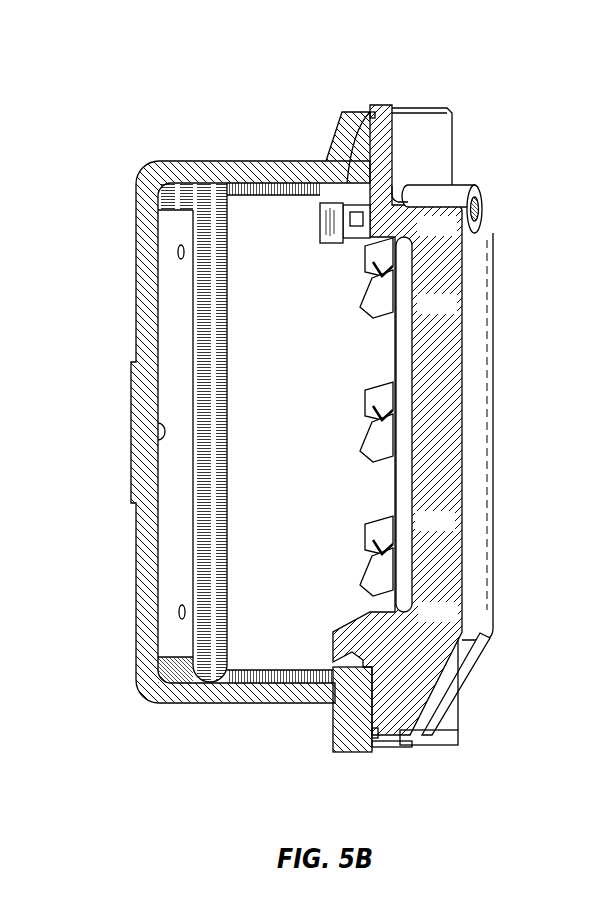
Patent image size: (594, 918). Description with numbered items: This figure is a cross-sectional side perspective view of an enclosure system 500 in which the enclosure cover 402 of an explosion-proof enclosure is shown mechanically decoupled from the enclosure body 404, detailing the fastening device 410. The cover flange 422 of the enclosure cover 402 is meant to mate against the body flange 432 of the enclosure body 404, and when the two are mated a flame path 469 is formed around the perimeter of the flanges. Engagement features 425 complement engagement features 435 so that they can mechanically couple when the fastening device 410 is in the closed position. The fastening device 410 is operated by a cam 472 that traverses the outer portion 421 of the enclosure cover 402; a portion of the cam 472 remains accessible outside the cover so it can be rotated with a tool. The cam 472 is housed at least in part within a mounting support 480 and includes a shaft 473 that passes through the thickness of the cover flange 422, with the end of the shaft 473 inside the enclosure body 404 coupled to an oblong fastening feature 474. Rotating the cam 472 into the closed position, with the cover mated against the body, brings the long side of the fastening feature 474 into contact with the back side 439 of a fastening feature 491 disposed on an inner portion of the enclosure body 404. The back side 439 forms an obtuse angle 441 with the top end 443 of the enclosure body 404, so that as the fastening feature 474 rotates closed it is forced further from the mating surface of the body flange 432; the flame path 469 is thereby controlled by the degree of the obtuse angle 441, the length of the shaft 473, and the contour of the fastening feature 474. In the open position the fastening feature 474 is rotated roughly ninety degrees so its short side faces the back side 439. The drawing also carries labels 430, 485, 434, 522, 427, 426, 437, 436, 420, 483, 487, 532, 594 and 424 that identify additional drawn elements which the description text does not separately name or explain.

The enclosure system 500 is at (145, 82).
The enclosure body 404 is at (122, 397).
The top end 443 is at (213, 160).
The fastening feature 491 is at (333, 156).
The interior cavity surface 430 is at (180, 330).
The obtuse angle 441 is at (320, 192).
The lower interior surface 485 is at (333, 665).
The enclosure cover 402 is at (516, 380).
The upper flange 434 is at (341, 116).
The pin 522 is at (368, 110).
The flame path 469 is at (387, 105).
The door body 427 is at (390, 268).
The upper arm 426 is at (396, 255).
The body wall portion 437 is at (384, 552).
The lower body portion 436 is at (394, 575).
The outer portion 421 is at (435, 125).
The cover flange 422 is at (427, 108).
The door plate 420 is at (480, 512).
The mounting support 480 is at (440, 182).
The cam 472 is at (483, 204).
The fastening feature 474 is at (484, 220).
The fastening device 410 is at (472, 180).
The back side 439 is at (340, 216).
The engagement features 425 is at (362, 280).
The engagement features 435 is at (360, 307).
The shaft 473 is at (364, 255).
The lower flange 483 is at (337, 652).
The seal 487 is at (342, 690).
The body flange 432 is at (345, 745).
The lower pin 532 is at (376, 740).
The bottom plate 594 is at (396, 747).
The support bracket 424 is at (458, 683).